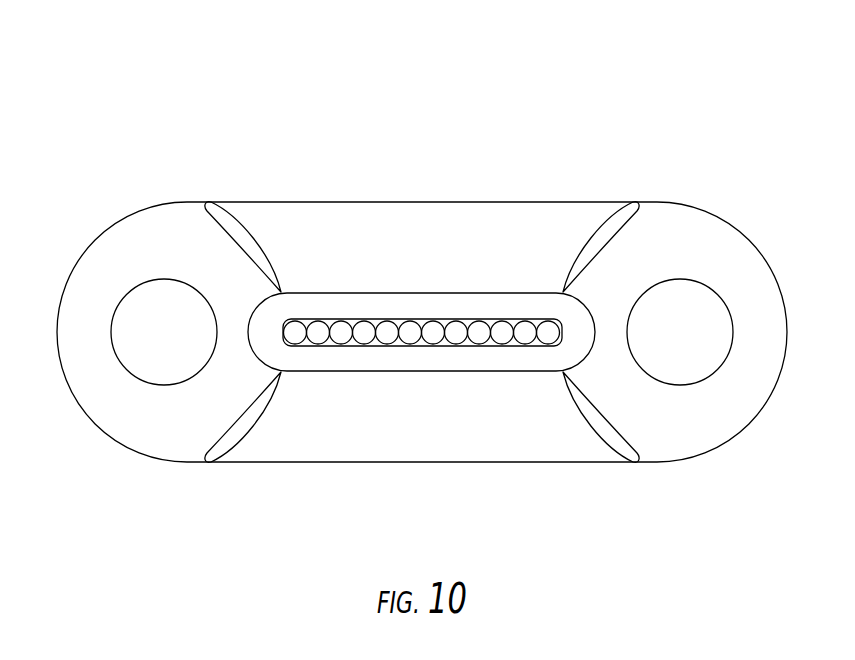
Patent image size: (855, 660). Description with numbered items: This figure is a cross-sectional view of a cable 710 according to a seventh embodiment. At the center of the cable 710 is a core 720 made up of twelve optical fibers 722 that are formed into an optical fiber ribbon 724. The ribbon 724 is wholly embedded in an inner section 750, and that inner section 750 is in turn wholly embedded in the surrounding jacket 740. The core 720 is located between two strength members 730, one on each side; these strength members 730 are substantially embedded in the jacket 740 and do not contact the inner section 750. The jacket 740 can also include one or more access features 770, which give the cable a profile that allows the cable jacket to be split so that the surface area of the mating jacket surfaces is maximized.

The cable 710 is at (118, 136).
The core 720 is at (335, 418).
The optical fibers 722 is at (478, 335).
The optical fiber ribbon 724 is at (375, 338).
The strength members 730 is at (158, 288).
The jacket 740 is at (150, 433).
The inner section 750 is at (370, 305).
The access features 770 is at (232, 233).